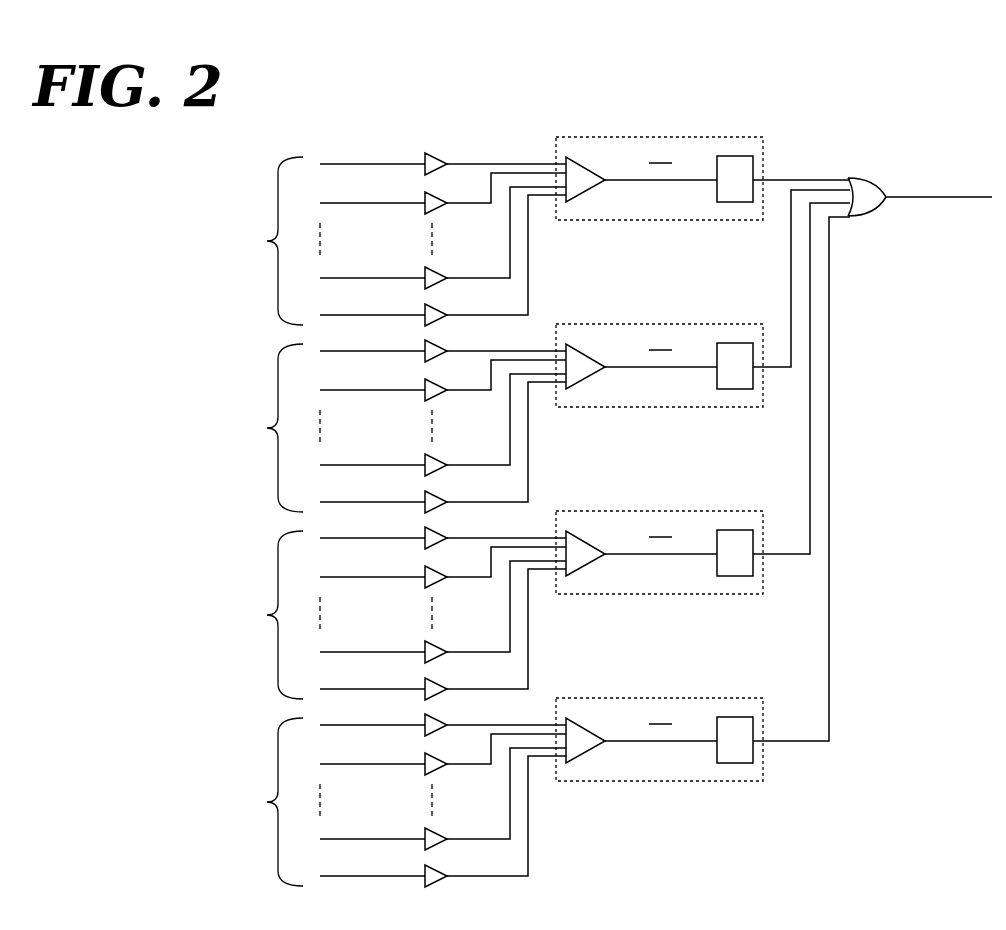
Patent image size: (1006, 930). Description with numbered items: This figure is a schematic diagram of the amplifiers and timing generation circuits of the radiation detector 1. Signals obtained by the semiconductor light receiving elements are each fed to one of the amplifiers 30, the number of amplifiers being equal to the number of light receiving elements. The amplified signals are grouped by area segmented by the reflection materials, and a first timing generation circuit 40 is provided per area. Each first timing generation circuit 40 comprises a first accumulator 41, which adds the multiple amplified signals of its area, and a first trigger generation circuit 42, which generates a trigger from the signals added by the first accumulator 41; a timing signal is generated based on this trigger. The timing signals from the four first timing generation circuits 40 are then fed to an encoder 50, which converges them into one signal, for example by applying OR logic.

The radiation detector 1 is at (972, 163).
The amplifiers 30 is at (426, 157).
The first timing generation circuit 40 is at (659, 459).
The first accumulator 41 is at (577, 196).
The first trigger generation circuit 42 is at (717, 188).
The encoder 50 is at (870, 215).